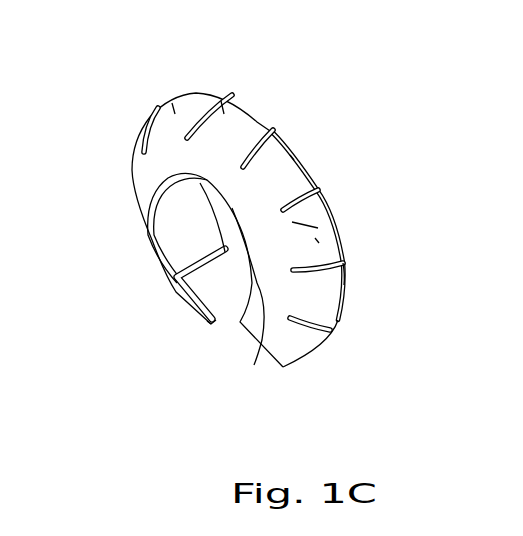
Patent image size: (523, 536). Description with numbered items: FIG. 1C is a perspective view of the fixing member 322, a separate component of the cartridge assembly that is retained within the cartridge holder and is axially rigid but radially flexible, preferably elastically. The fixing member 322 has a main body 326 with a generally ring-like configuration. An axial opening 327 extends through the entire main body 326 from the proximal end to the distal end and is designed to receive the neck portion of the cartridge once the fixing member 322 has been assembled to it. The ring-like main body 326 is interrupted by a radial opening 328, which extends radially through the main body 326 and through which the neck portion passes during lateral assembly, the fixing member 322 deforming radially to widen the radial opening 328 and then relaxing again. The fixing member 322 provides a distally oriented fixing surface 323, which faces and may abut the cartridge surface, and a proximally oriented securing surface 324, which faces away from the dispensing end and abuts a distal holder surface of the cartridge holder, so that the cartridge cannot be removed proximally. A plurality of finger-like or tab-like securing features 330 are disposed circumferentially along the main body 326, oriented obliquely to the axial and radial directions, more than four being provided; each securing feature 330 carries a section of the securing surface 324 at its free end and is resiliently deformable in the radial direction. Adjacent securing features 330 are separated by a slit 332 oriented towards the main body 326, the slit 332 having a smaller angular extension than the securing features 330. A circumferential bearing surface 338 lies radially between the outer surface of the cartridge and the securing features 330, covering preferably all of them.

The fixing member 322 is at (293, 190).
The fixing surface 323 is at (254, 365).
The securing surface 324 is at (198, 100).
The main body 326 is at (292, 222).
The axial opening 327 is at (242, 240).
The radial opening 328 is at (219, 326).
The securing features 330 is at (175, 112).
The slit 332 is at (347, 266).
The bearing surface 338 is at (187, 207).